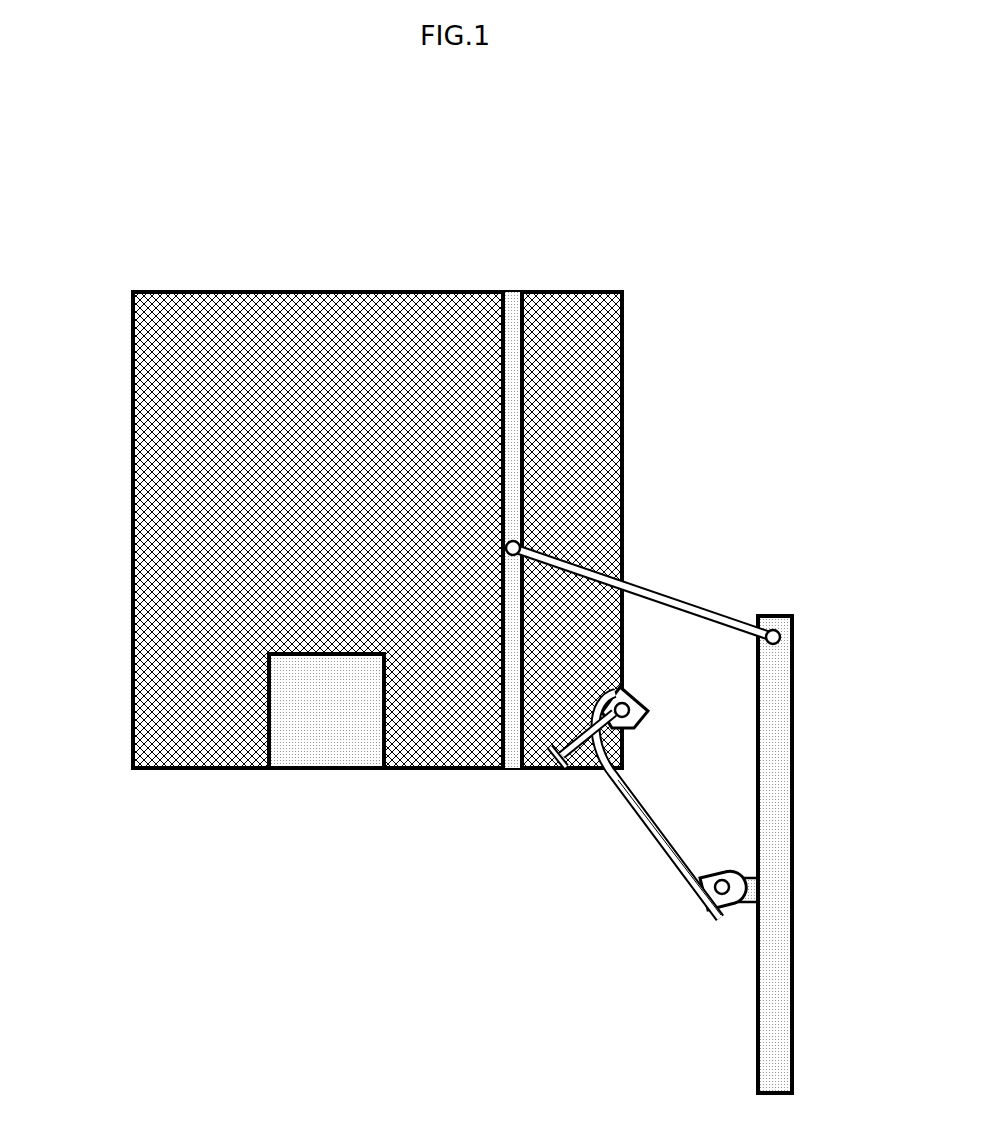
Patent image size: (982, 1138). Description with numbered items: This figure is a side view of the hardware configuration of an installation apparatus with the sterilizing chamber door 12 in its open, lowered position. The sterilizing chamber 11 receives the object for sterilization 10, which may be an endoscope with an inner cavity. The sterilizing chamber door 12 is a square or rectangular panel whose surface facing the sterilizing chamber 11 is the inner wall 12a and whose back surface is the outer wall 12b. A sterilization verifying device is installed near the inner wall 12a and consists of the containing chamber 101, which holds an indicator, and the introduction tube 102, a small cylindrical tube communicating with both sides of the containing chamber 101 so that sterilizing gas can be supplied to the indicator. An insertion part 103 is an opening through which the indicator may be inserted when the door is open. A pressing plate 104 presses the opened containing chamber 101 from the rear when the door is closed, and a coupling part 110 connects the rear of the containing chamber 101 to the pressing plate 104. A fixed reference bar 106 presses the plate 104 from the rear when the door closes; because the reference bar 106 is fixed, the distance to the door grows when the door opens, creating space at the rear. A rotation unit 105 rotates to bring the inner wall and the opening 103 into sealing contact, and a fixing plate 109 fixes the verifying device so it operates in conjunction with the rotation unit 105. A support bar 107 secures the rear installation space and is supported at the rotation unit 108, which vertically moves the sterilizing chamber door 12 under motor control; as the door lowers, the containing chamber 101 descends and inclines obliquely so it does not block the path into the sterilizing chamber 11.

The object for sterilization 10 is at (326, 711).
The sterilizing chamber 11 is at (132, 600).
The sterilizing chamber door 12 is at (772, 797).
The inner wall 12a is at (757, 1030).
The outer wall 12b is at (792, 988).
The containing chamber 101 is at (645, 730).
The introduction tube 102 is at (653, 852).
The insertion part 103 is at (640, 700).
The pressing plate 104 is at (557, 765).
The rotation unit 105 is at (720, 872).
The reference bar 106 is at (508, 742).
The support bar 107 is at (673, 597).
The rotation unit 108 is at (522, 545).
The fixing plate 109 is at (679, 873).
The coupling part 110 is at (580, 735).